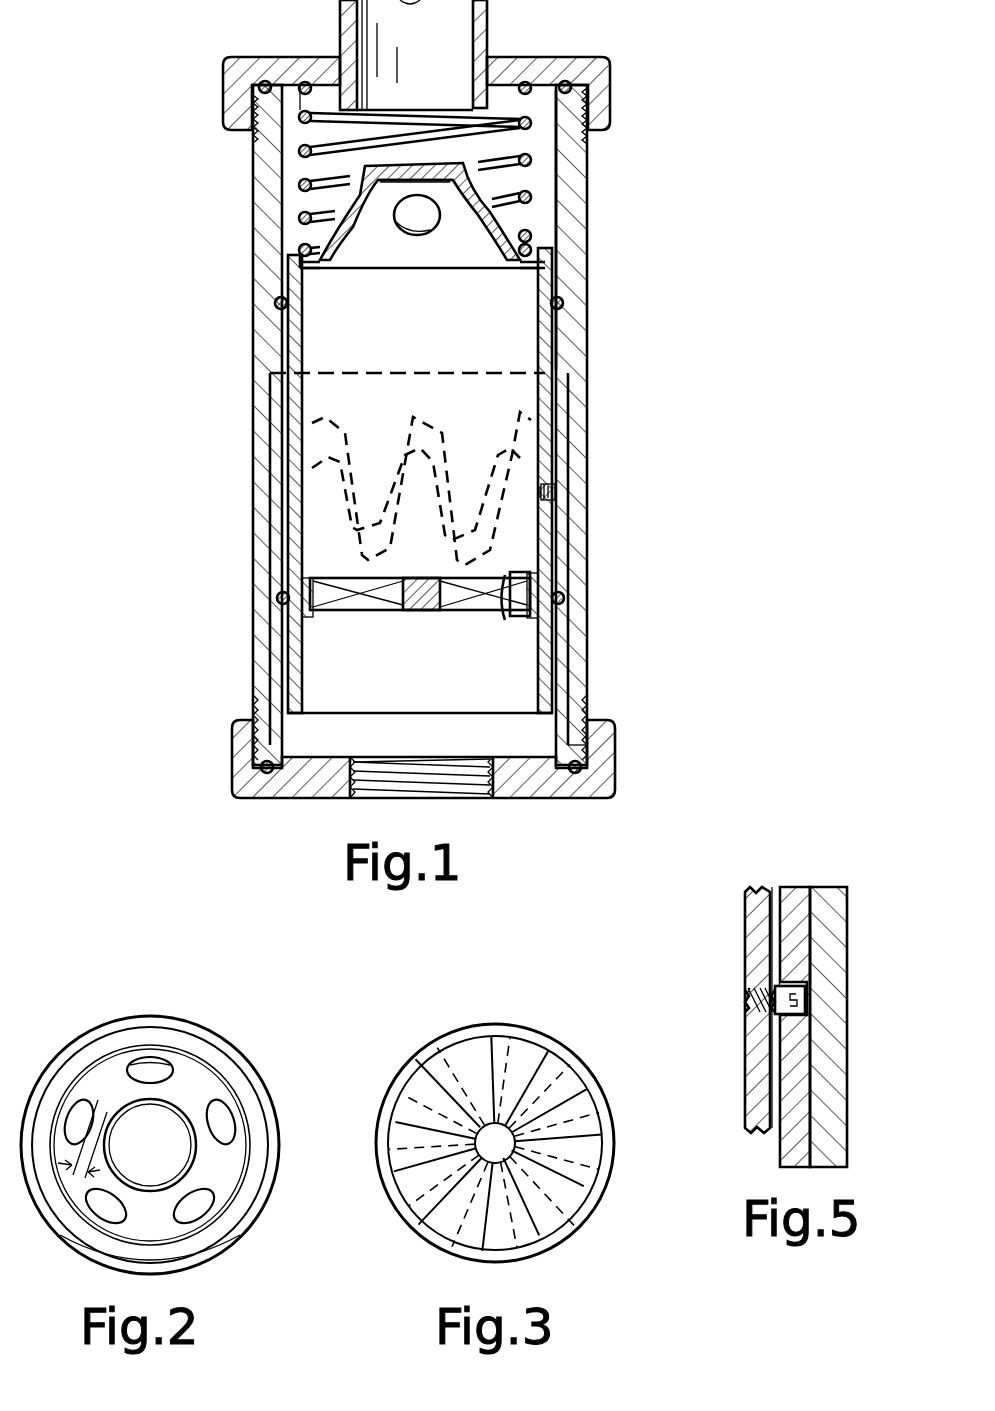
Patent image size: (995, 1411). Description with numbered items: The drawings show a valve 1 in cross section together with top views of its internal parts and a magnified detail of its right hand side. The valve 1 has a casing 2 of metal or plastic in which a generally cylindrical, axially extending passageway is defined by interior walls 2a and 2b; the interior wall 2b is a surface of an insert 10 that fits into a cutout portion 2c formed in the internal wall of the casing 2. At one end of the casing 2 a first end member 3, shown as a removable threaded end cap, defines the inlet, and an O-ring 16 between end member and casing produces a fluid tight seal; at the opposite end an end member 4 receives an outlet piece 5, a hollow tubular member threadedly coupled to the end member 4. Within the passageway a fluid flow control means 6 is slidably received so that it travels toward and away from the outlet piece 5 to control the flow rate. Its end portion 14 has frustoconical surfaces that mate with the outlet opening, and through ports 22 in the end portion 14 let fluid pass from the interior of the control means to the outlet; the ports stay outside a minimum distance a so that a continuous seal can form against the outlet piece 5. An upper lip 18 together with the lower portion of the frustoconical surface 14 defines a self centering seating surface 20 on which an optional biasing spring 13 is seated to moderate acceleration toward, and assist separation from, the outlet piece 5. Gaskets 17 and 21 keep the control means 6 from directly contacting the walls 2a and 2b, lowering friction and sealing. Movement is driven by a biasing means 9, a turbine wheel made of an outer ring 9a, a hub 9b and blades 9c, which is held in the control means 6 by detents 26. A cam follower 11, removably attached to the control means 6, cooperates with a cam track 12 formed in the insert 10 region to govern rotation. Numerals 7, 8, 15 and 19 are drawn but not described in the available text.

In FIG. 1, the valve 1 is at (604, 360).
In FIG. 1, the casing 2 is at (580, 430).
In FIG. 5, the casing 2 is at (826, 885).
In FIG. 1, the interior wall 2a is at (560, 188).
In FIG. 1, the interior wall 2b is at (570, 382).
In FIG. 1, the cutout portion 2c is at (590, 548).
In FIG. 1, the first end member 3 is at (540, 798).
In FIG. 1, the end member 4 is at (562, 62).
In FIG. 1, the outlet piece 5 is at (490, 9).
In FIG. 1, the fluid flow control means 6 is at (543, 277).
In FIG. 2, the fluid flow control means 6 is at (226, 1041).
In FIG. 5, the fluid flow control means 6 is at (745, 925).
In FIG. 1, the compression spring 7 is at (480, 152).
In FIG. 1, the seal ring 8 is at (490, 111).
In FIG. 1, the biasing means 9 is at (528, 590).
In FIG. 3, the biasing means 9 is at (516, 1135).
In FIG. 3, the outer ring 9a is at (582, 1066).
In FIG. 3, the hub 9b is at (508, 1148).
In FIG. 3, the blades 9c is at (582, 1184).
In FIG. 1, the insert 10 is at (565, 521).
In FIG. 5, the insert 10 is at (790, 885).
In FIG. 1, the cam follower 11 is at (560, 490).
In FIG. 5, the cam follower 11 is at (805, 1008).
In FIG. 1, the cam track 12 is at (398, 449).
In FIG. 5, the cam track 12 is at (810, 987).
In FIG. 1, the biasing spring 13 is at (440, 176).
In FIG. 1, the end portion 14 is at (365, 172).
In FIG. 2, the end portion 14 is at (122, 1108).
In FIG. 1, the threads 15 is at (590, 742).
In FIG. 1, the O-ring 16 is at (580, 770).
In FIG. 1, the gasket 17 is at (563, 303).
In FIG. 1, the upper lip 18 is at (297, 249).
In FIG. 2, the upper lip 18 is at (230, 1240).
In FIG. 1, the shoulder 19 is at (325, 62).
In FIG. 1, the self centering seating surface 20 is at (305, 248).
In FIG. 2, the self centering seating surface 20 is at (262, 1120).
In FIG. 1, the gasket 21 is at (283, 600).
In FIG. 1, the through ports 22 is at (487, 232).
In FIG. 2, the through ports 22 is at (200, 1197).
In FIG. 1, the detents 26 is at (522, 612).
In FIG. 2, the distance a is at (80, 1180).